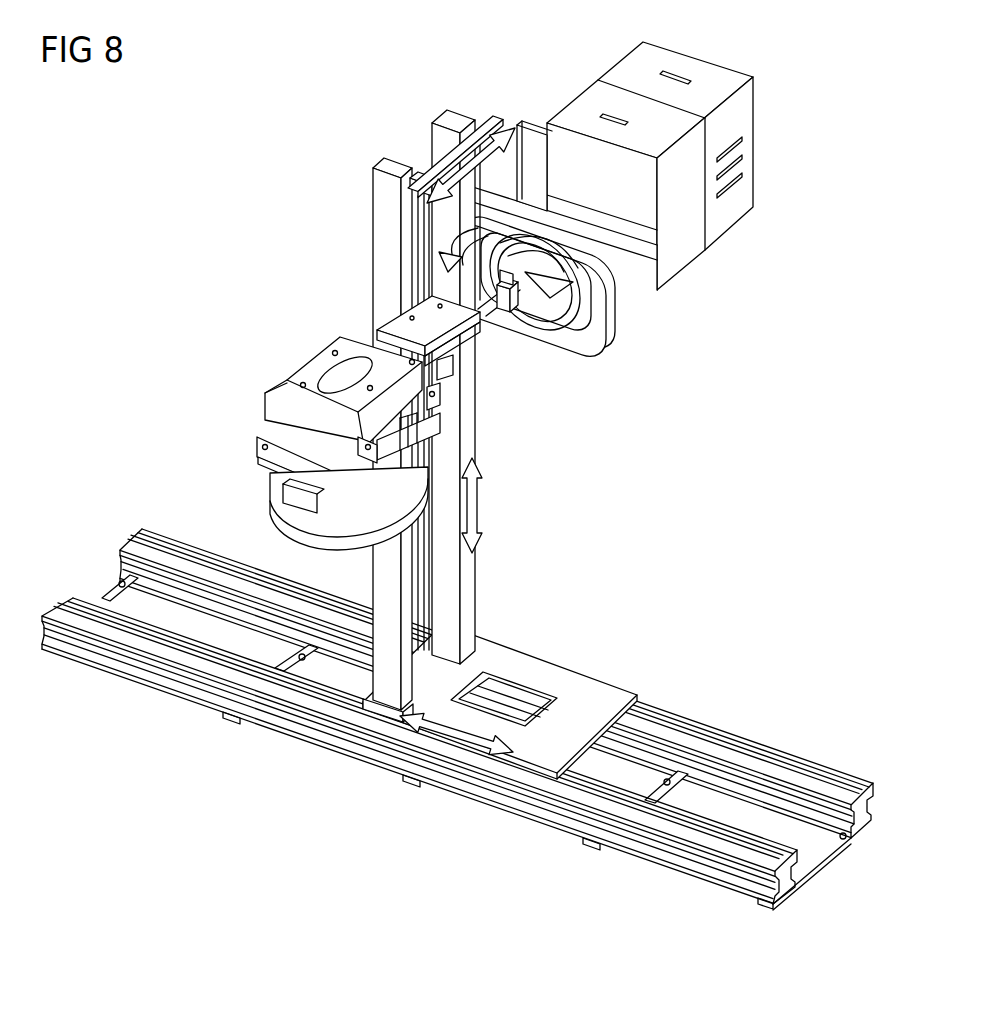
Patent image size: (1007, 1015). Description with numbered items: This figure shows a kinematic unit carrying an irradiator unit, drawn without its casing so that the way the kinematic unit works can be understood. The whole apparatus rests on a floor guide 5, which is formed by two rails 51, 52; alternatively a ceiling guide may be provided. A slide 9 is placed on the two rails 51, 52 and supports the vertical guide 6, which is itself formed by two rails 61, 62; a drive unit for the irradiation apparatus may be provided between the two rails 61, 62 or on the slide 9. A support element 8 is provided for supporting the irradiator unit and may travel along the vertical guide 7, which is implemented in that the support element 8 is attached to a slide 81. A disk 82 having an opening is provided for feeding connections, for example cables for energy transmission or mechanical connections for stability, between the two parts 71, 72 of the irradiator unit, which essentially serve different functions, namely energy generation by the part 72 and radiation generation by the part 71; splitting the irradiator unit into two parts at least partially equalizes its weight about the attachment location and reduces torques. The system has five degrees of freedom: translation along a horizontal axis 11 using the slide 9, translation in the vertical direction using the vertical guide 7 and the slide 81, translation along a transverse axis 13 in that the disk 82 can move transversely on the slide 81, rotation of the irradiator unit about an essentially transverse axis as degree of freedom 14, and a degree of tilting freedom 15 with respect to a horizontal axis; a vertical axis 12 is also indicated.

The floor guide 5 is at (454, 690).
The vertical guide 6 is at (414, 384).
The vertical guide 7 is at (381, 395).
The support element 8 is at (521, 112).
The slide 9 is at (587, 696).
The horizontal axis 11 is at (463, 738).
The vertical linear axis 12 is at (480, 510).
The transverse axis 13 is at (506, 172).
The degree of freedom 14 is at (540, 305).
The degree of tilting freedom 15 is at (446, 258).
The rail 51 is at (62, 604).
The rail 52 is at (141, 532).
The rail 61 is at (378, 193).
The rail 62 is at (458, 119).
The part of the irradiator unit 71 is at (310, 365).
The part of the irradiator unit 72 is at (752, 108).
The slide 81 is at (443, 163).
The disk 82 is at (613, 318).